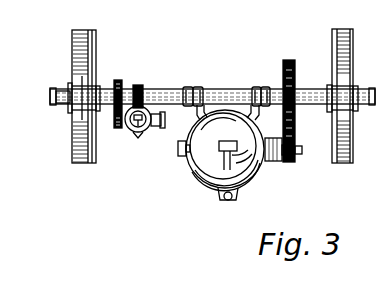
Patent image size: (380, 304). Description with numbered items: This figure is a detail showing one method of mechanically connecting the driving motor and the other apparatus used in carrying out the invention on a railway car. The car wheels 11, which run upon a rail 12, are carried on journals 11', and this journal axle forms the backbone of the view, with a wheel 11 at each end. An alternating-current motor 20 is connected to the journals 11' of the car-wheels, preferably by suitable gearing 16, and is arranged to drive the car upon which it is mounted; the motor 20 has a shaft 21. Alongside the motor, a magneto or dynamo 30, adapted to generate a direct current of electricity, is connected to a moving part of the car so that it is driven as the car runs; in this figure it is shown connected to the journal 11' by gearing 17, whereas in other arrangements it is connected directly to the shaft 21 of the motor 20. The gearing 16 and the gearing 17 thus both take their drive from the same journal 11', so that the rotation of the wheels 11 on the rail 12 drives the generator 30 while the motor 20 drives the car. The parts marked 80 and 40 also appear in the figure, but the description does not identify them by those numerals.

The shaft end 80 is at (47, 52).
The alternating-current motor 20 is at (203, 168).
The shaft with gears 40 is at (151, 0).
The wheels 11 is at (139, 81).
The rail 12 is at (272, 0).
The journals 11' is at (190, 83).
The gearing 17 is at (108, 107).
The magneto or dynamo 30 is at (157, 131).
The shaft 21 is at (175, 153).
The gearing 16 is at (297, 143).